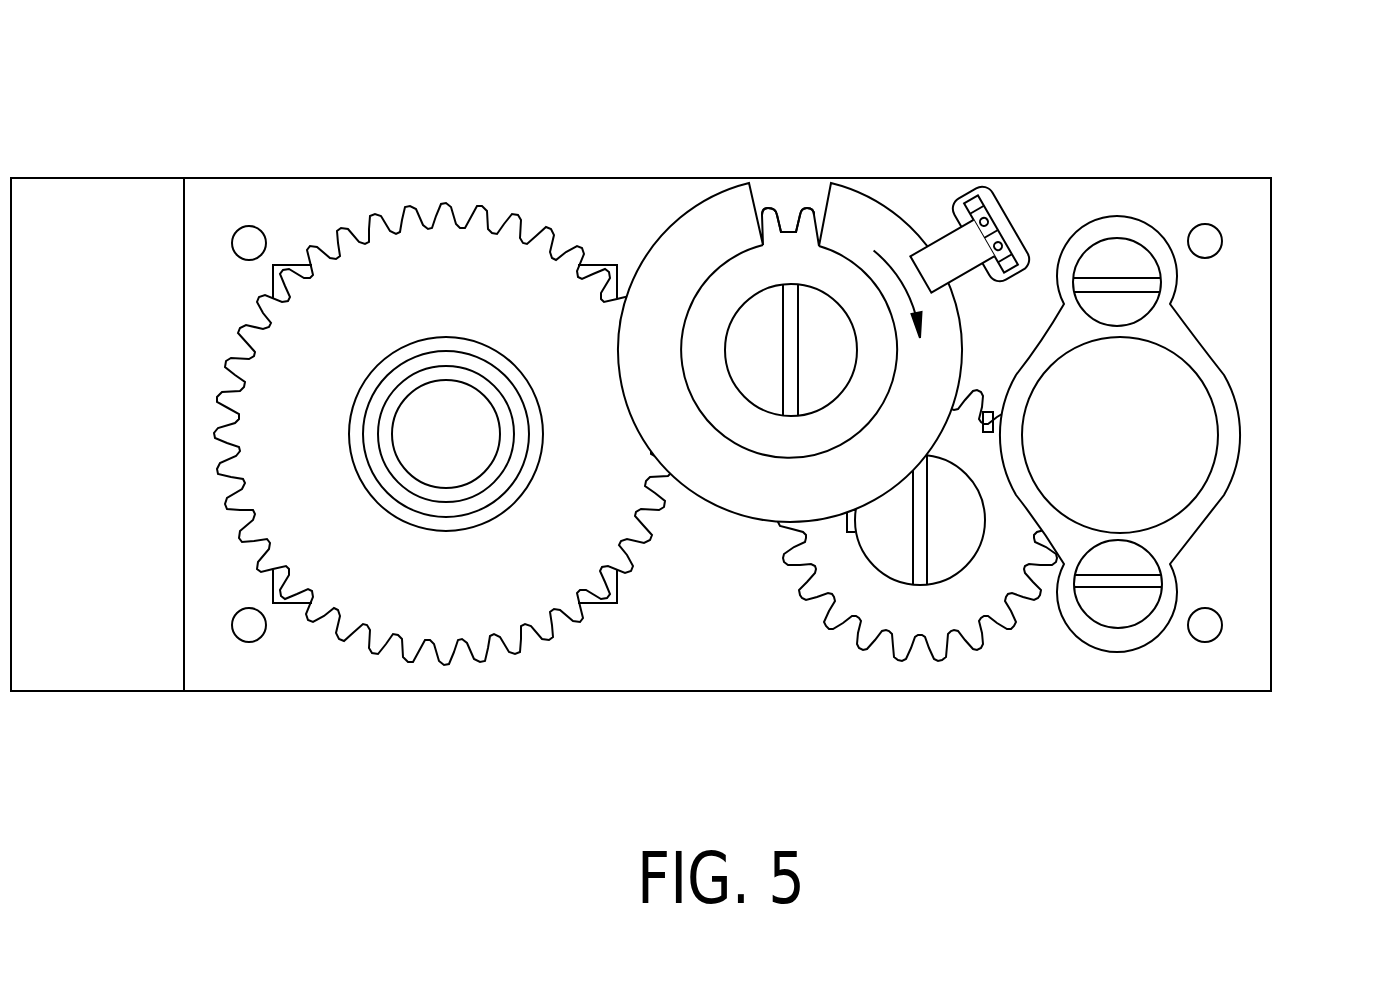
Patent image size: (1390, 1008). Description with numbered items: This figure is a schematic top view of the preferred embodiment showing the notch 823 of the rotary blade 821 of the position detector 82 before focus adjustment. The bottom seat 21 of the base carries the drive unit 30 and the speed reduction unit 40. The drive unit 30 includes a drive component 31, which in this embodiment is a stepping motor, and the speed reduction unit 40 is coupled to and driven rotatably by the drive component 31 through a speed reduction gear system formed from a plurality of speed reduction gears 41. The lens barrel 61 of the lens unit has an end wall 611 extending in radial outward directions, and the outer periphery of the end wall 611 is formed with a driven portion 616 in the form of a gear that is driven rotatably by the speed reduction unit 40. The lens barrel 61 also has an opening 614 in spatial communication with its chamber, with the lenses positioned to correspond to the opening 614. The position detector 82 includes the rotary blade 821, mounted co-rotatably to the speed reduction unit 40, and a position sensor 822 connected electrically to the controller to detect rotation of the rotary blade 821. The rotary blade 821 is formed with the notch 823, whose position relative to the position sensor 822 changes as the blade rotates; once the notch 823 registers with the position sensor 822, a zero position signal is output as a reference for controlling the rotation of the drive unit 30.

The bottom seat 21 is at (323, 668).
The drive unit 30 is at (1181, 434).
The drive component 31 is at (1195, 395).
The speed reduction unit 40 is at (837, 633).
The speed reduction gears 41 is at (798, 257).
The lens barrel 61 is at (445, 336).
The end wall 611 is at (480, 280).
The opening 614 is at (448, 402).
The driven portion 616 is at (549, 240).
The position detector 82 is at (977, 170).
The rotary blade 821 is at (790, 268).
The position sensor 822 is at (947, 250).
The notch 823 is at (777, 207).